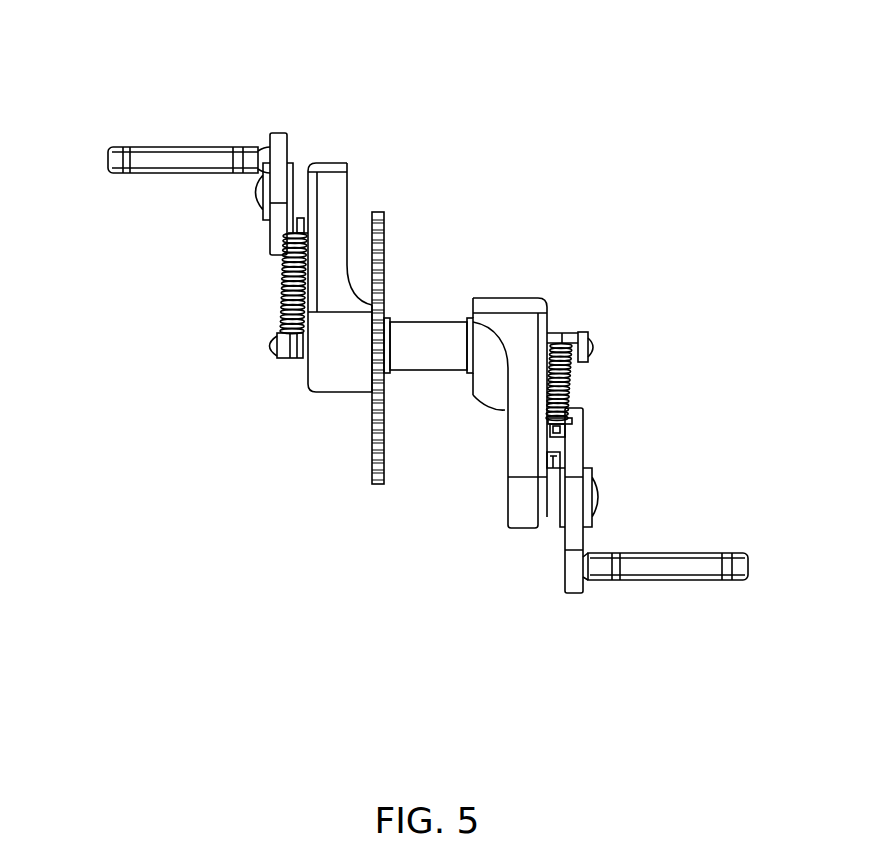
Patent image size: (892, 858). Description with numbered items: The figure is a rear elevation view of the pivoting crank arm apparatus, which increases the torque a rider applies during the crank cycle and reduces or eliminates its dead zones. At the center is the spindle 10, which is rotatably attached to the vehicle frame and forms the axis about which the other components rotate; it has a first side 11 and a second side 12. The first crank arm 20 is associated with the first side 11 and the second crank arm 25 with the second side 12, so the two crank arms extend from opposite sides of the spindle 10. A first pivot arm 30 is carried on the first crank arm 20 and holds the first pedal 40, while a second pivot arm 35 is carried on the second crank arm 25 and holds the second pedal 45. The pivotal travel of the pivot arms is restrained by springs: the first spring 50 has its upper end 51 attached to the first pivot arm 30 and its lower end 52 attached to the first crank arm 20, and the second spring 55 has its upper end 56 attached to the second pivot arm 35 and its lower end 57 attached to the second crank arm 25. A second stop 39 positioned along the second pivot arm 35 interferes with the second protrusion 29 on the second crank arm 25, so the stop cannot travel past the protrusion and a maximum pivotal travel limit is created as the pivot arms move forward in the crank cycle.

The spindle 10 is at (437, 374).
The first side 11 is at (391, 314).
The second side 12 is at (459, 314).
The first crank arm 20 is at (335, 162).
The second crank arm 25 is at (518, 530).
The second protrusion 29 is at (549, 460).
The first pivot arm 30 is at (283, 132).
The second pivot arm 35 is at (572, 597).
The second stop 39 is at (549, 437).
The first pedal 40 is at (124, 146).
The second pedal 45 is at (736, 552).
The first spring 50 is at (280, 283).
The upper end 51 is at (280, 241).
The lower end 52 is at (275, 321).
The second spring 55 is at (580, 382).
The upper end 56 is at (572, 405).
The lower end 57 is at (578, 368).